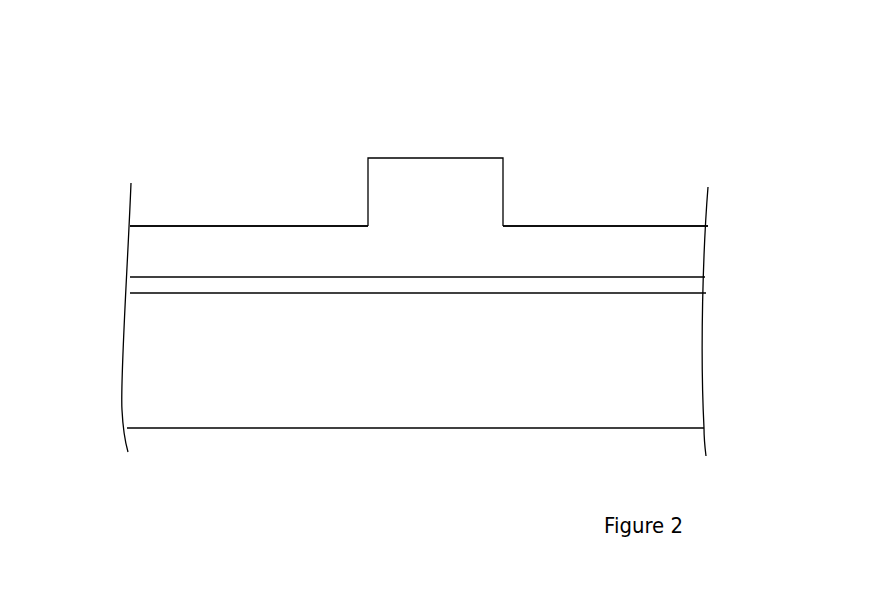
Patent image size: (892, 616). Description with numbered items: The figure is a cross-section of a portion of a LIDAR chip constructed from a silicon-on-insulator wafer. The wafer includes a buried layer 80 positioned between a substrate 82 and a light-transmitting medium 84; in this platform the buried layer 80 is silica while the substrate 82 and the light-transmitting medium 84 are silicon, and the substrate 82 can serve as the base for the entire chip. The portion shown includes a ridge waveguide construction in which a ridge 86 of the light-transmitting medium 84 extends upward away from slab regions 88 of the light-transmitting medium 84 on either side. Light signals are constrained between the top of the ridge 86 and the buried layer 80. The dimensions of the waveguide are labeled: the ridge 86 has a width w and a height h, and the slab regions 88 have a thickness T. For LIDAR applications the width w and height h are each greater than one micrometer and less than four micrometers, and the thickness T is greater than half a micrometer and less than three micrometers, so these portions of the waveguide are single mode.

The buried layer 80 is at (288, 287).
The substrate 82 is at (137, 407).
The light-transmitting medium 84 is at (178, 255).
The ridge 86 is at (527, 181).
The slab regions 88 is at (272, 224).
The slab region thickness T is at (284, 226).
The ridge height h is at (373, 159).
The ridge width w is at (503, 125).